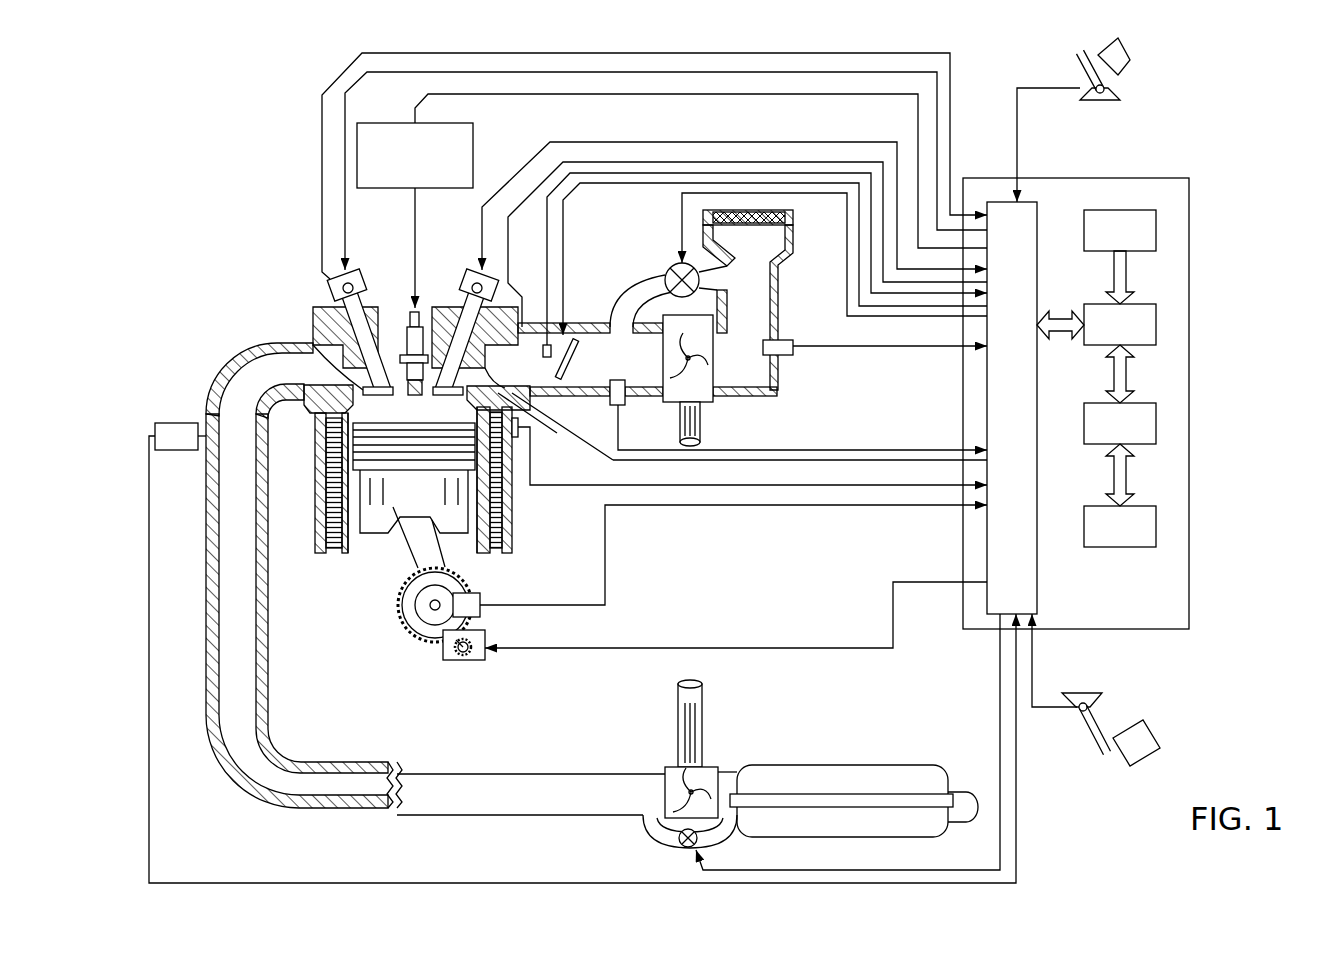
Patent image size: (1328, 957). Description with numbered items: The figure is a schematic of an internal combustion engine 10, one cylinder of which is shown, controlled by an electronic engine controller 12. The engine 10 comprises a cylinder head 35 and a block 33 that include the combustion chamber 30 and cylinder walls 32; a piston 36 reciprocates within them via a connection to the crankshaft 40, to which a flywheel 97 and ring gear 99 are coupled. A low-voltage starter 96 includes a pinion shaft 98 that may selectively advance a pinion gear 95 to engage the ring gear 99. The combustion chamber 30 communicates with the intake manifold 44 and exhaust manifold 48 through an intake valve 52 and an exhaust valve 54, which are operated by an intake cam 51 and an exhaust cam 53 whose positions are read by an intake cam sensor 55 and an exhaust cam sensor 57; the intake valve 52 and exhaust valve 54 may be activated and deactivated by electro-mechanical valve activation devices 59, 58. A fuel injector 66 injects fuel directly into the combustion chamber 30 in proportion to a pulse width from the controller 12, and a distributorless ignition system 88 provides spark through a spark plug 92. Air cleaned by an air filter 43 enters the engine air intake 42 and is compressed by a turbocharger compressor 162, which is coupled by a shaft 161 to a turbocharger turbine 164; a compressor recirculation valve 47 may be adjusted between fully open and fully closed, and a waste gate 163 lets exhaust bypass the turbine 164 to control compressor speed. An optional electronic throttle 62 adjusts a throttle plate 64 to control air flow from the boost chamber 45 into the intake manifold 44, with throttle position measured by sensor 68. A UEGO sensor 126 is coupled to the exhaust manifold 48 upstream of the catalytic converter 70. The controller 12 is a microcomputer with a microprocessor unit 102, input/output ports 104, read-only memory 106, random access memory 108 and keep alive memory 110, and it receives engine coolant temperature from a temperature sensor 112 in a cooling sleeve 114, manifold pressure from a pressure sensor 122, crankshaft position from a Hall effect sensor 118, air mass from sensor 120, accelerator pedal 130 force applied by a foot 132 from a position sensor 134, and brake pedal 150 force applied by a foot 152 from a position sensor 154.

The internal combustion engine 10 is at (252, 263).
The electronic engine controller 12 is at (1188, 180).
The combustion chamber 30 is at (413, 408).
The cylinder walls 32 is at (357, 543).
The block 33 is at (313, 445).
The cylinder head 35 is at (312, 303).
The piston 36 is at (390, 555).
The crankshaft 40 is at (423, 625).
The engine air intake 42 is at (627, 232).
The air filter 43 is at (767, 230).
The intake manifold 44 is at (542, 377).
The boost chamber 45 is at (639, 377).
The compressor recirculation valve 47 is at (673, 260).
The exhaust manifold 48 is at (296, 381).
The intake cam 51 is at (473, 268).
The intake valve 52 is at (458, 370).
The exhaust cam 53 is at (352, 268).
The exhaust valve 54 is at (313, 343).
The intake cam sensor 55 is at (497, 292).
The exhaust cam sensor 57 is at (330, 290).
The valve activation device 58 is at (363, 287).
The valve activation device 59 is at (470, 290).
The electronic throttle 62 is at (572, 347).
The throttle plate 64 is at (563, 367).
The fuel injector 66 is at (540, 423).
The throttle position sensor 68 is at (522, 328).
The catalytic converter 70 is at (777, 767).
The distributorless ignition system 88 is at (372, 123).
The spark plug 92 is at (418, 300).
The pinion gear 95 is at (465, 660).
The starter 96 is at (477, 662).
The flywheel 97 is at (408, 608).
The pinion shaft 98 is at (460, 660).
The ring gear 99 is at (433, 640).
The microprocessor unit 102 is at (1156, 322).
The input/output ports 104 is at (1040, 212).
The read-only memory 106 is at (1156, 225).
The random access memory 108 is at (1156, 421).
The keep alive memory 110 is at (1156, 525).
The temperature sensor 112 is at (539, 451).
The cooling sleeve 114 is at (500, 507).
The Hall effect sensor 118 is at (480, 595).
The air mass sensor 120 is at (793, 347).
The pressure sensor 122 is at (610, 407).
The UEGO sensor 126 is at (150, 425).
The accelerator pedal 130 is at (1078, 65).
The foot 132 is at (1128, 52).
The position sensor 134 is at (1107, 88).
The brake pedal 150 is at (1107, 753).
The foot 152 is at (1143, 720).
The position sensor 154 is at (1075, 707).
The shaft 161 is at (677, 417).
The turbocharger compressor 162 is at (703, 383).
The waste gate 163 is at (682, 850).
The turbocharger turbine 164 is at (673, 767).